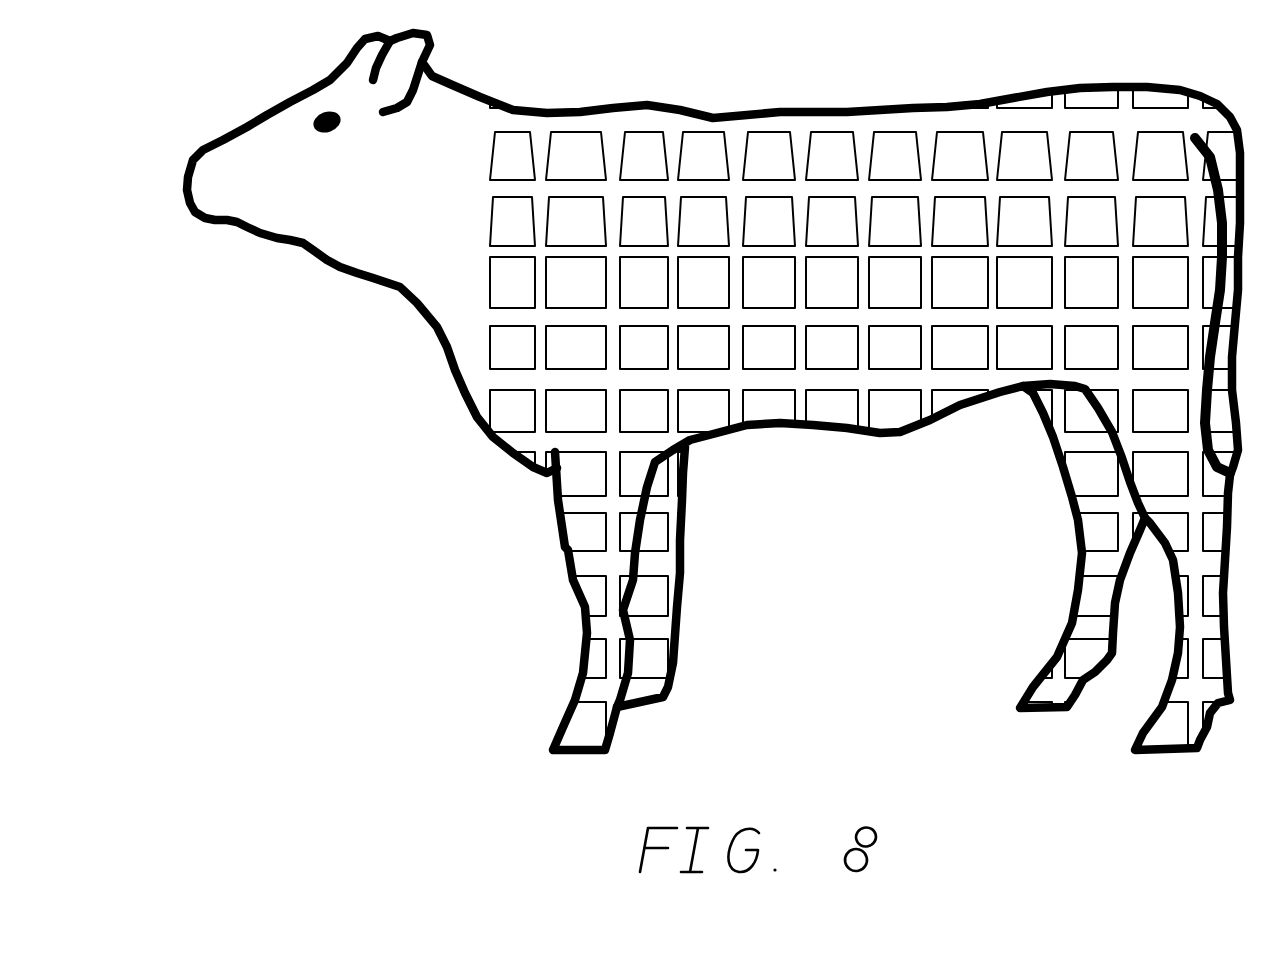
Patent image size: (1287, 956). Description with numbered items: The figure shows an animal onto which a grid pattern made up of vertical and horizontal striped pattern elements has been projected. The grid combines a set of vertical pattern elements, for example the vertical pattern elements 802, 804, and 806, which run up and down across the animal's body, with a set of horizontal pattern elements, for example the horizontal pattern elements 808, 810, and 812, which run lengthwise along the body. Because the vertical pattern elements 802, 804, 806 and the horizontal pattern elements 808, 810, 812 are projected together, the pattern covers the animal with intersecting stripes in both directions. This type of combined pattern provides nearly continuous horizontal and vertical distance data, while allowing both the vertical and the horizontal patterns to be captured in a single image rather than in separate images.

The vertical pattern element 802 is at (669, 132).
The vertical pattern element 804 is at (800, 135).
The vertical pattern element 806 is at (922, 132).
The horizontal pattern element 808 is at (487, 190).
The horizontal pattern element 810 is at (487, 253).
The horizontal pattern element 812 is at (487, 318).